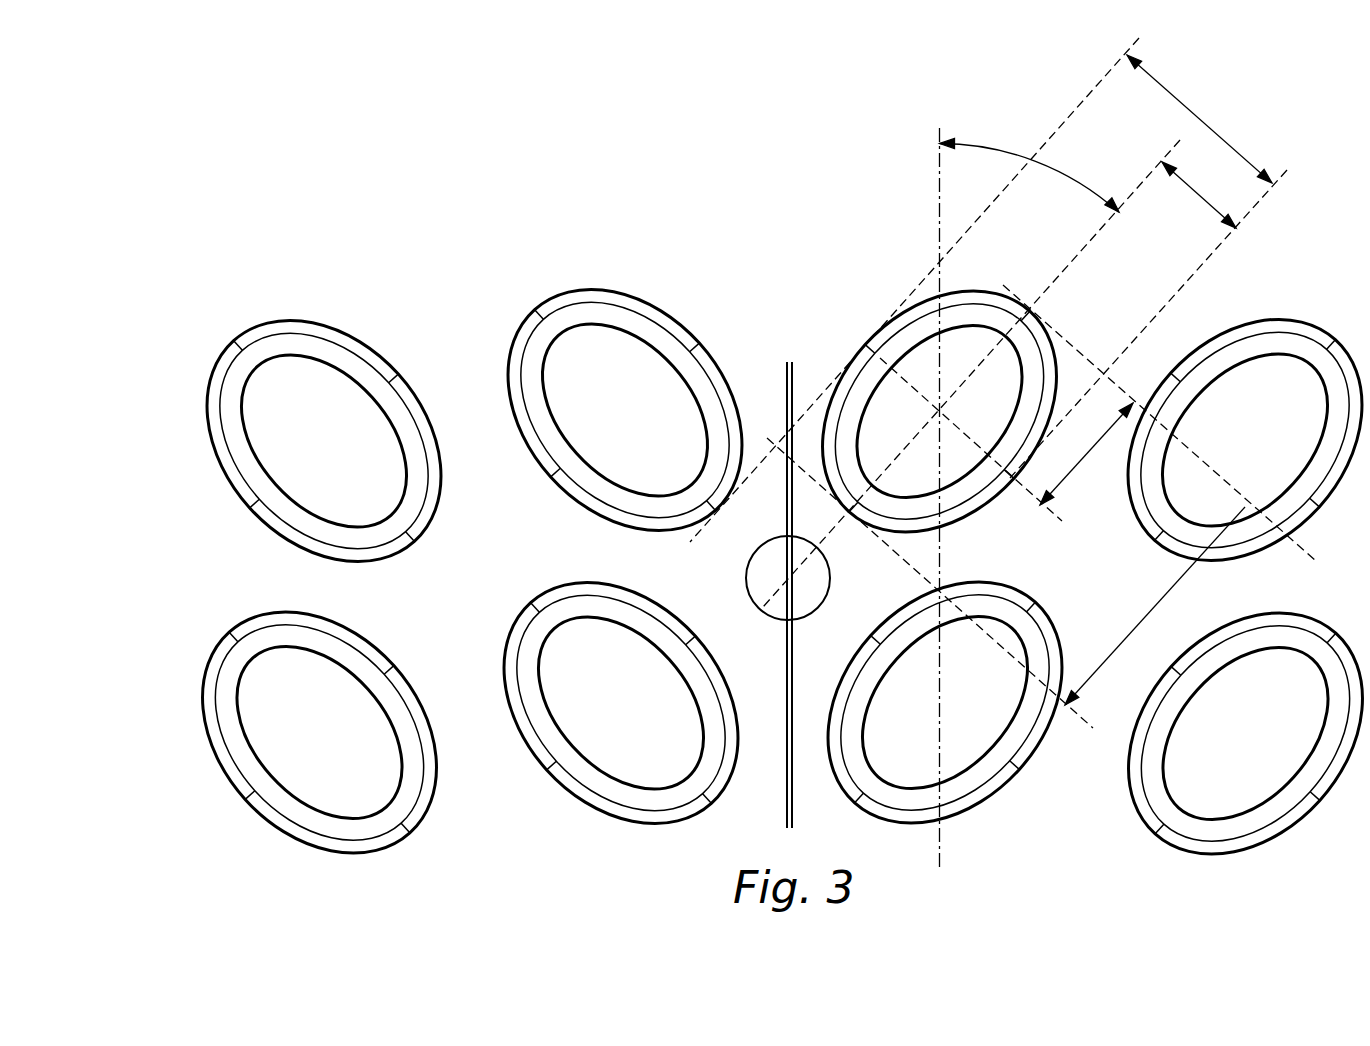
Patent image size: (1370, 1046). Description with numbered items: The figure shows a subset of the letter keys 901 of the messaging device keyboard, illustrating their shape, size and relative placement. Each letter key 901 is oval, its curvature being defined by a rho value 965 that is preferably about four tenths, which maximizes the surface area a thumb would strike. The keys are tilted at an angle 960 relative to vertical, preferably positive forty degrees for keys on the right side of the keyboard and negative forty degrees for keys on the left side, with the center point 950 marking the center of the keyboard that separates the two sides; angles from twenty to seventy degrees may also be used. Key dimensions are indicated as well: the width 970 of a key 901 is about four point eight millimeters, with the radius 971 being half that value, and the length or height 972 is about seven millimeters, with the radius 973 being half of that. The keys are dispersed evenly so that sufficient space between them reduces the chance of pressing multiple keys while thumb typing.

The letter key 901 is at (908, 302).
The center point of keyboard 950 is at (749, 547).
The angle 960 is at (1053, 165).
The rho value 965 is at (968, 262).
The key width 970 is at (1200, 117).
The half-width radius 971 is at (1193, 197).
The key length 972 is at (1165, 600).
The half-length radius 973 is at (1088, 452).